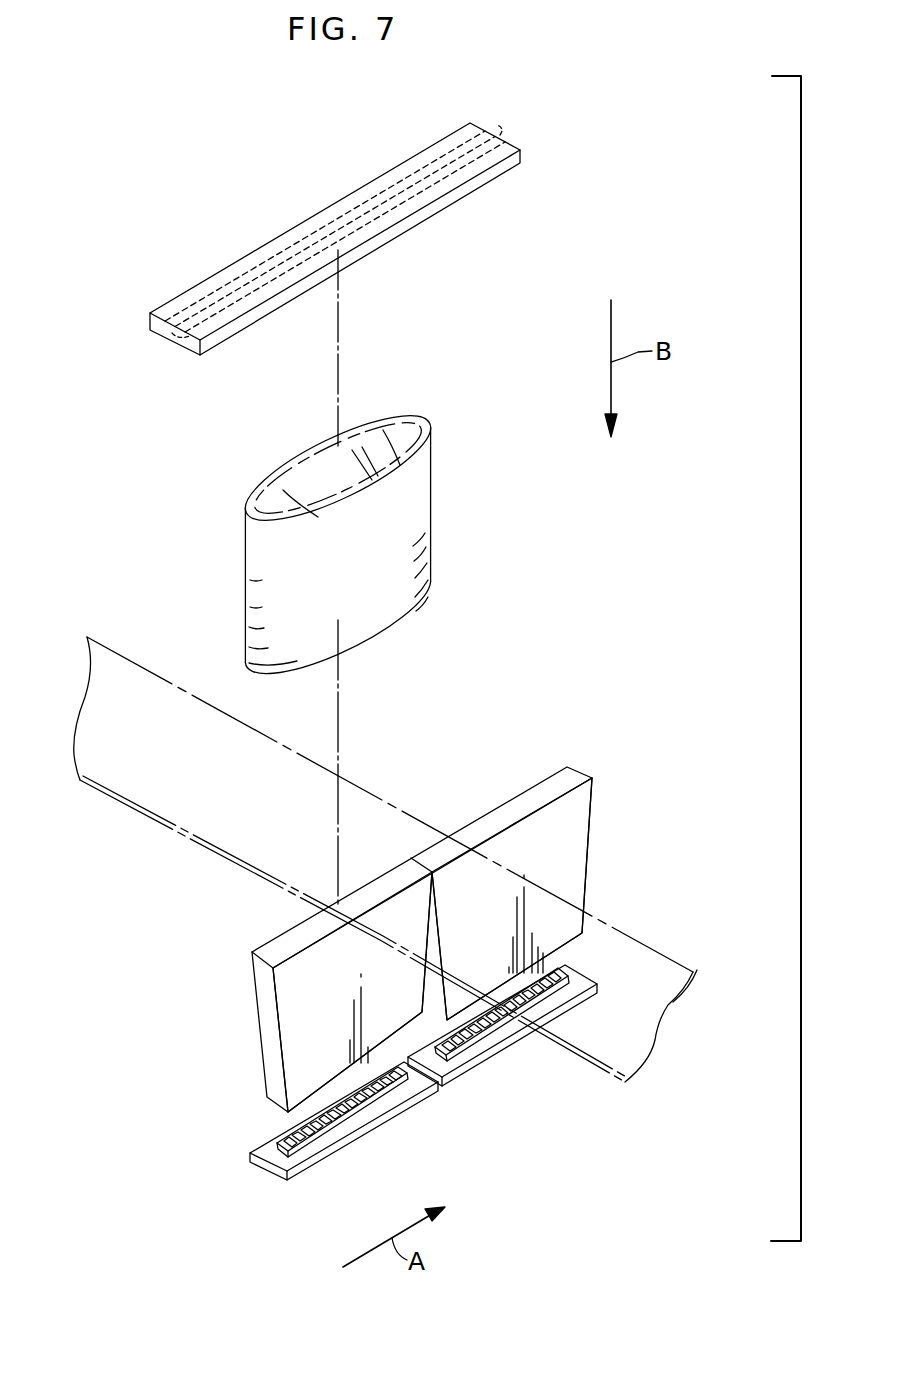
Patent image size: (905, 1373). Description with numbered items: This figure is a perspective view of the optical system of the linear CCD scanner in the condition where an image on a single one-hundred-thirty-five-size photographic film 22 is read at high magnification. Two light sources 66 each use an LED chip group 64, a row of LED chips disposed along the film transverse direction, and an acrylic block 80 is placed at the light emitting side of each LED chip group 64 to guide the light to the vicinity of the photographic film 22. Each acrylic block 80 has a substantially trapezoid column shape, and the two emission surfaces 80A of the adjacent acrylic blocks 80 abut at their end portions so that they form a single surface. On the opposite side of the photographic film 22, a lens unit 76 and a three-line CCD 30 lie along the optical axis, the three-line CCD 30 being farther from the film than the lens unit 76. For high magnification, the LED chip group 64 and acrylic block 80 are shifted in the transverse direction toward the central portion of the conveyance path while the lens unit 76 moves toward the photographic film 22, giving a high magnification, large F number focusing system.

The three-line CCD 30 is at (256, 251).
The lens unit 76 is at (430, 513).
The photographic film 22 is at (643, 942).
The acrylic block 80 is at (588, 853).
The emission surface 80A is at (567, 782).
The light source 66 is at (355, 1141).
The LED chip group 64 is at (278, 1152).